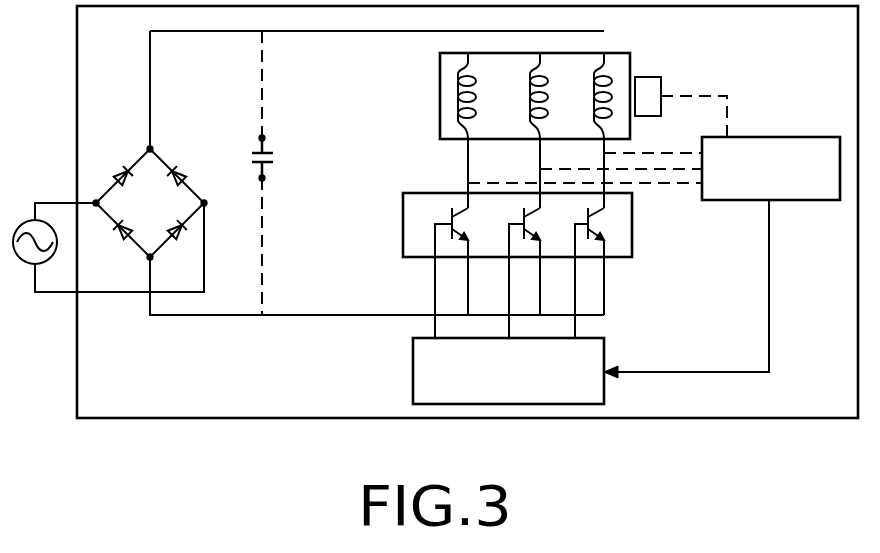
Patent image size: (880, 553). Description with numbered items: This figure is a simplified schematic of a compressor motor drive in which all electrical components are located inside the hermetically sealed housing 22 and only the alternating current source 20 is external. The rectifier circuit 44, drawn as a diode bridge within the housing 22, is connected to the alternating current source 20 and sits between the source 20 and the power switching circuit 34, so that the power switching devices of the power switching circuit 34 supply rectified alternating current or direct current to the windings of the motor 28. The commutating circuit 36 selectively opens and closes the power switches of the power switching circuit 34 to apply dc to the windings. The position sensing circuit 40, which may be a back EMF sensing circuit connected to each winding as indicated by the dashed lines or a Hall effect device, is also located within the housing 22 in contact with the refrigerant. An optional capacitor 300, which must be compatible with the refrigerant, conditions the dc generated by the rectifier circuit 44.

The alternating current source 20 is at (22, 265).
The hermetically sealed housing 22 is at (476, 418).
The motor 28 is at (617, 53).
The power switching circuit 34 is at (632, 225).
The commutating circuit 36 is at (604, 390).
The position sensing circuit 40 is at (755, 137).
The rectifier circuit 44 is at (166, 211).
The capacitor 300 is at (270, 168).